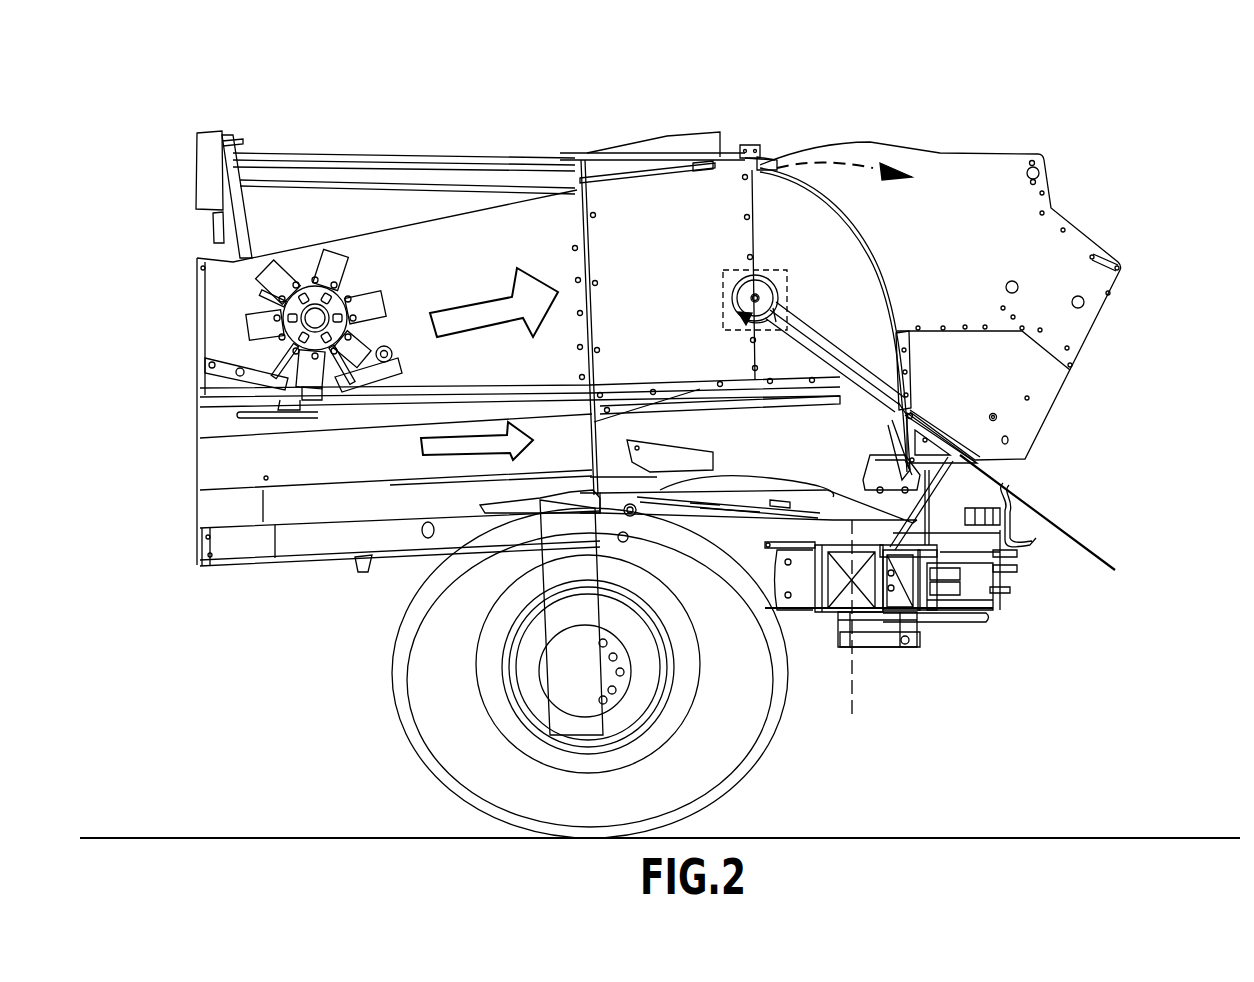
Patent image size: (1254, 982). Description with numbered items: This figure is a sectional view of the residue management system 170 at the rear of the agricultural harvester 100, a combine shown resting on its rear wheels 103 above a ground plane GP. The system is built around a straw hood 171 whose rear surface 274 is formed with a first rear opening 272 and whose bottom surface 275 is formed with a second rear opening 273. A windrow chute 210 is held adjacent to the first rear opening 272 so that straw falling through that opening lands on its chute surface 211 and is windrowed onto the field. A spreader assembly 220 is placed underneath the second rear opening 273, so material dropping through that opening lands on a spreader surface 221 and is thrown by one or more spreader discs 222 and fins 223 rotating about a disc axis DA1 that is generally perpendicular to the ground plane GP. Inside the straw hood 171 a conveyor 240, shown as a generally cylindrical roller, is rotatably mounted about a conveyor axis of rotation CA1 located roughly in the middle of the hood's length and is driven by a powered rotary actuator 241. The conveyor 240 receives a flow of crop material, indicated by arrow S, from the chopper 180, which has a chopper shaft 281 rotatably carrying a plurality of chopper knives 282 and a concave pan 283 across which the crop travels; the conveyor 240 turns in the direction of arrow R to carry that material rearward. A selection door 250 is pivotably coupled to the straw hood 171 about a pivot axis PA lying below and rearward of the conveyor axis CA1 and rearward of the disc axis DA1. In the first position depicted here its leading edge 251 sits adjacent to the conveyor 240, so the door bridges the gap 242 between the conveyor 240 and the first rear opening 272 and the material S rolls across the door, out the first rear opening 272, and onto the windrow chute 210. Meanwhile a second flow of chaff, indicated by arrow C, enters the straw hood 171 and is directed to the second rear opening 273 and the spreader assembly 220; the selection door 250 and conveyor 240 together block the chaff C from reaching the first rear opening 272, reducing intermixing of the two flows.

The agricultural harvester 100 is at (1106, 119).
The rear wheels 103 is at (717, 718).
The residue management system 170 is at (860, 180).
The straw hood 171 is at (783, 178).
The chopper 180 is at (304, 338).
The windrow chute 210 is at (915, 451).
The chute surface 211 is at (910, 412).
The spreader assembly 220 is at (900, 604).
The spreader surface 221 is at (903, 650).
The spreader disc 222 is at (877, 590).
The fins 223 is at (793, 592).
The conveyor 240 is at (748, 288).
The powered rotary actuator 241 is at (724, 280).
The gap 242 is at (832, 384).
The selection door 250 is at (798, 322).
The leading edge 251 is at (778, 300).
The first rear opening 272 is at (912, 380).
The second rear opening 273 is at (860, 492).
The rear surface 274 is at (888, 302).
The bottom surface 275 is at (752, 518).
The chopper shaft 281 is at (315, 312).
The chopper knives 282 is at (268, 278).
The concave pan 283 is at (342, 400).
The flow of material S is at (493, 290).
The chaff flow C is at (470, 432).
The direction of rotation R is at (765, 312).
The conveyor axis of rotation CA1 is at (752, 298).
The pivot axis PA is at (894, 430).
The disc axis DA1 is at (855, 717).
The ground plane GP is at (750, 837).